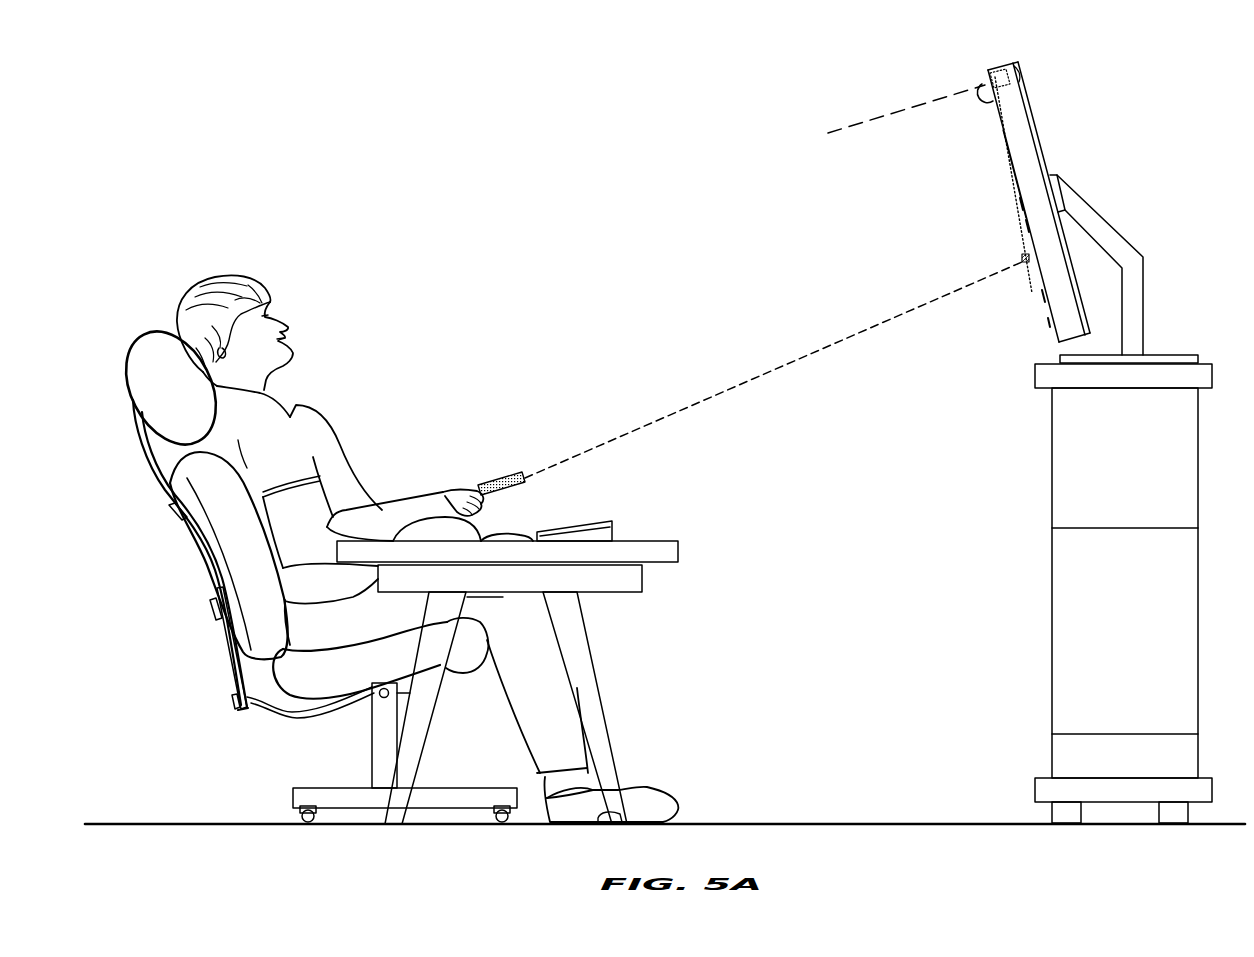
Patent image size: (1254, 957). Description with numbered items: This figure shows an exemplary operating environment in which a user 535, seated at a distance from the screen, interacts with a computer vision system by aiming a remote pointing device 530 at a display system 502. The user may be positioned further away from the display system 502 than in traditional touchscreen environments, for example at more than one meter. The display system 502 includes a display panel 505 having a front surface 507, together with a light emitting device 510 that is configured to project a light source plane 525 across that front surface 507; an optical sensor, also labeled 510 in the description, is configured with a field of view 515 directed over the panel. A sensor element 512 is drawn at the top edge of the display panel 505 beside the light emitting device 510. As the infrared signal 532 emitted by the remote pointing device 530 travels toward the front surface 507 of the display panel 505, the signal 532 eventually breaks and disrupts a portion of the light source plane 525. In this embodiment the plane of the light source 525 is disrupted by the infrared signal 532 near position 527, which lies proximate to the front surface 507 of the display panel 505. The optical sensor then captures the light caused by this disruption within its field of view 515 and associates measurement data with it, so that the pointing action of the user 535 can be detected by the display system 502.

The display system 502 is at (985, 197).
The display panel 505 is at (1042, 126).
The front surface 507 is at (1011, 181).
The light emitting device 510 is at (1022, 78).
The sensor 512 is at (1020, 71).
The field of view 515 is at (982, 100).
The light source plane 525 is at (1016, 215).
The position 527 is at (1022, 268).
The remote pointing device 530 is at (493, 483).
The infrared signal 532 is at (725, 391).
The user 535 is at (326, 413).